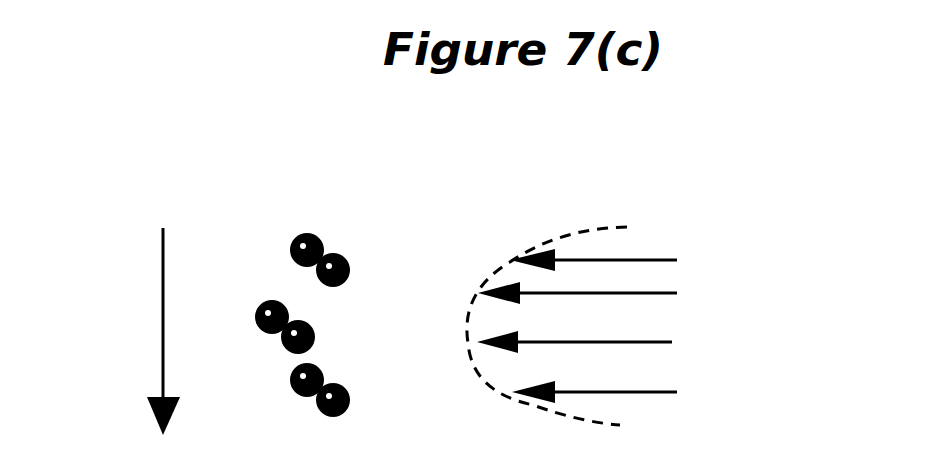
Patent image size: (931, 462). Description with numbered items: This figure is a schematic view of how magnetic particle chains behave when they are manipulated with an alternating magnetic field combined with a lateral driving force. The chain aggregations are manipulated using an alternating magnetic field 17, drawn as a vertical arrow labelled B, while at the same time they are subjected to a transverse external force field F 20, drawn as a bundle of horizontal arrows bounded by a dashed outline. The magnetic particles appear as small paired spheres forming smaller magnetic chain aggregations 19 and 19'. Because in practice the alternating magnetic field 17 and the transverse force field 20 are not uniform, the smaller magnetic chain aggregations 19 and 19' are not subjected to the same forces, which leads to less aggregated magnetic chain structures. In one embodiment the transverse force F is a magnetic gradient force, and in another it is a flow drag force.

The alternating magnetic field 17 is at (163, 322).
The magnetic chain aggregation 19 is at (300, 292).
The magnetic chain aggregation 19' is at (381, 230).
The transverse external force field F 20 is at (672, 342).